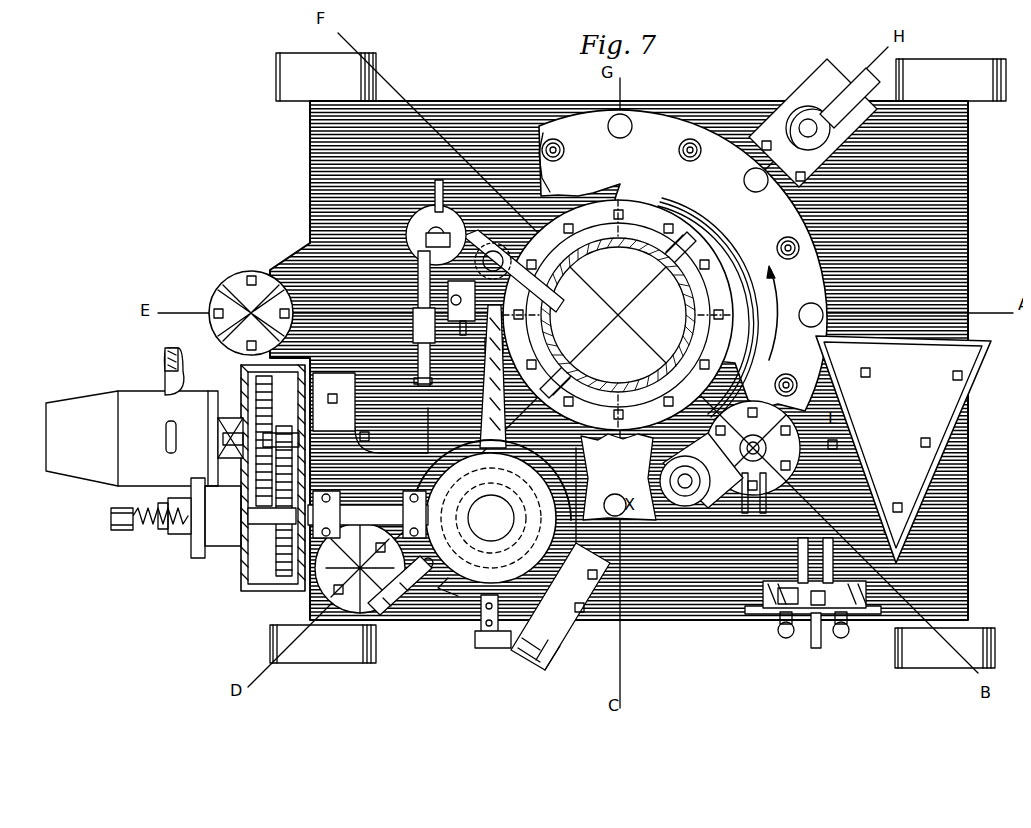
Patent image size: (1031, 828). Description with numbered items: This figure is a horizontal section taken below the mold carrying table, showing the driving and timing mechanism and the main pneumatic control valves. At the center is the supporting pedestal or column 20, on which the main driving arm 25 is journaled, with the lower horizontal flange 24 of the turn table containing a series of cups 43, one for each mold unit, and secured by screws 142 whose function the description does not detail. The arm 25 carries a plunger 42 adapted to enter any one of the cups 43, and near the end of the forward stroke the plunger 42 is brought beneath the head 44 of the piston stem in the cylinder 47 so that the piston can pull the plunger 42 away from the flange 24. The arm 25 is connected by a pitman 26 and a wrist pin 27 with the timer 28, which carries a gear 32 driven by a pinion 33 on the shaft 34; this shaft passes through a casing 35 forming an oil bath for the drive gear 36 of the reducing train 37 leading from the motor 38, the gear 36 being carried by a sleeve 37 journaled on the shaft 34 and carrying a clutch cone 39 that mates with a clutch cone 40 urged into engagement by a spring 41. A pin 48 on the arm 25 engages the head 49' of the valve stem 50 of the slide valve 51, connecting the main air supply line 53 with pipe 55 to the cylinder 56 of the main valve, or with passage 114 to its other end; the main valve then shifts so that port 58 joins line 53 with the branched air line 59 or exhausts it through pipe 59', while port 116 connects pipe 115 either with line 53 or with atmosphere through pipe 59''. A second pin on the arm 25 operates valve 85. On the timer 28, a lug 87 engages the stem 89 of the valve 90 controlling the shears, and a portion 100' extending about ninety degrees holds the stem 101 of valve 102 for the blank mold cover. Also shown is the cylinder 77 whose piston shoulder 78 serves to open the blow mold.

The supporting pedestal or column 20 is at (597, 372).
The lower horizontal flange 24 is at (695, 118).
The main driving arm 25 is at (540, 288).
The pitman 26 is at (500, 352).
The wrist pin 27 is at (496, 460).
The timer 28 is at (493, 511).
The gear 32 is at (491, 518).
The pinion 33 is at (460, 512).
The shaft 34 is at (368, 496).
The casing 35 is at (250, 518).
The drive gear 36 is at (276, 560).
The reducing train 37 is at (248, 395).
The motor 38 is at (112, 470).
The clutch cone 39 is at (218, 528).
The clutch cone 40 is at (206, 528).
The spring 41 is at (160, 515).
The plunger 42 is at (551, 162).
The cups 43 is at (618, 110).
The head 44 is at (445, 220).
The cylinder 47 is at (440, 215).
The pin 48 is at (432, 240).
The valve stem 50 is at (440, 265).
The slide valve 51 is at (375, 372).
The main air supply line 53 is at (440, 293).
The pipe 55 is at (752, 600).
The cylinder 56 is at (772, 612).
The port 58 is at (808, 610).
The air line 59 is at (821, 520).
The pipe 59' is at (777, 657).
The pipe 59'' is at (856, 653).
The cylinder 77 is at (790, 95).
The shoulder 78 is at (842, 78).
The valve 85 is at (503, 340).
The lug 87 is at (440, 580).
The stem 89 is at (473, 605).
The valve 90 is at (485, 640).
The portion 100' is at (370, 528).
The stem 101 is at (415, 565).
The valve 102 is at (380, 608).
The passage 114 is at (846, 593).
The pipe 115 is at (805, 545).
The port 116 is at (830, 560).
The screws 142 is at (682, 153).
The head 49' is at (389, 440).